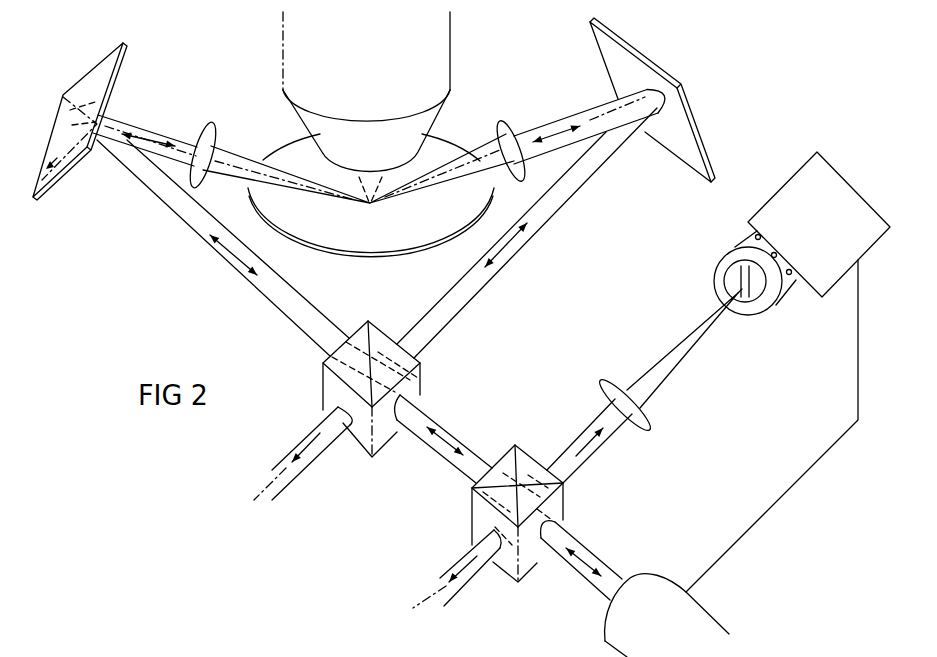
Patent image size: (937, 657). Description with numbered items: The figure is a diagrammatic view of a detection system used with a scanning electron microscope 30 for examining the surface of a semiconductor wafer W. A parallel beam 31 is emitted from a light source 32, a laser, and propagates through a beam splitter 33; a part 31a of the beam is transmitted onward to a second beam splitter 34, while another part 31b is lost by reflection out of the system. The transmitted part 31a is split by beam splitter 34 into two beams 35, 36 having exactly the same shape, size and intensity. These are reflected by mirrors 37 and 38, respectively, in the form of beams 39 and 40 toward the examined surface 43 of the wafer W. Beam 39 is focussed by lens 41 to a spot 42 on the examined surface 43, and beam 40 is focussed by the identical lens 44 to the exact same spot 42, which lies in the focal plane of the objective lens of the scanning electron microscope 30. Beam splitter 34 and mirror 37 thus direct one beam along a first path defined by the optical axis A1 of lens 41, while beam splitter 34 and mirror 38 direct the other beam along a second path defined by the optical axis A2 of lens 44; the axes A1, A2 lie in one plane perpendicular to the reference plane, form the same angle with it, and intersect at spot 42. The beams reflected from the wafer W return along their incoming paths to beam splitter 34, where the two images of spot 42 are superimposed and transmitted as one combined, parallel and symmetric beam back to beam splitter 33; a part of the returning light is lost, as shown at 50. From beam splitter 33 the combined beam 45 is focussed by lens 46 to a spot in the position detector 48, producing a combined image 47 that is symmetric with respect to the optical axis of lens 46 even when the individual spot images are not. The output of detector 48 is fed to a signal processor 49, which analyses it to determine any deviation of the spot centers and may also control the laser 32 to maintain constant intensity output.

The scanning electron microscope 30 is at (437, 62).
The parallel beam 31 is at (615, 575).
The transmitted part of beam 31a is at (473, 444).
The reflected part of beam 31b is at (442, 578).
The light source 32 is at (692, 622).
The beam splitter 33 is at (543, 572).
The second beam splitter 34 is at (392, 433).
The beam 35 is at (491, 281).
The beam 36 is at (198, 234).
The mirror 37 is at (646, 68).
The mirror 38 is at (120, 58).
The beam 39 is at (549, 127).
The beam 40 is at (147, 134).
The lens 41 is at (500, 132).
The spot 42 is at (370, 206).
The examined surface 43 is at (369, 268).
The lens 44 is at (207, 125).
The combined beam 45 is at (563, 457).
The lens 46 is at (602, 382).
The combined image 47 is at (714, 277).
The position detector 48 is at (766, 312).
The signal processor 49 is at (772, 197).
The lost beam part 50 is at (292, 472).
The optical axis of lens 41 A1 is at (544, 124).
The optical axis of lens 44 A2 is at (161, 136).
The semiconductor wafer W is at (433, 255).